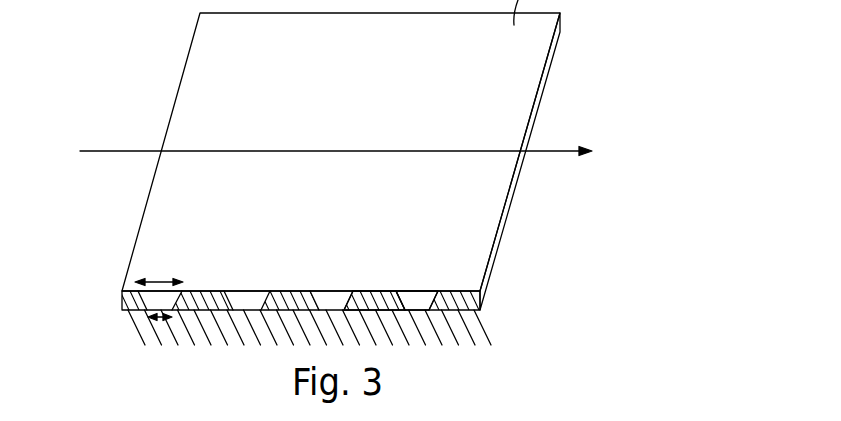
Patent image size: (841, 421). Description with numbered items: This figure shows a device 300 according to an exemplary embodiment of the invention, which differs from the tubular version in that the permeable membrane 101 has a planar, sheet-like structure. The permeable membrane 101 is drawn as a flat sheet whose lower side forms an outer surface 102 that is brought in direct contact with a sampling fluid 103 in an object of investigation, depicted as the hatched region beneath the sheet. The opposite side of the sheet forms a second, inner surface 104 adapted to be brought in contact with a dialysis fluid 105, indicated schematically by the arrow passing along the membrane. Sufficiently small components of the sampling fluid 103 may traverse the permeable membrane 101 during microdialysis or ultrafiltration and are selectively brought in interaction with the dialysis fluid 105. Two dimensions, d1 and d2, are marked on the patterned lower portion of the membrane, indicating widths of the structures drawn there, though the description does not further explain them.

The device 300 is at (636, 59).
The dialysis fluid 105 is at (107, 150).
The permeable membrane 101 is at (284, 298).
The inner surface 104 is at (370, 291).
The outer surface 102 is at (400, 312).
The sampling fluid 103 is at (473, 328).
The width d1 is at (161, 334).
The width d2 is at (159, 269).